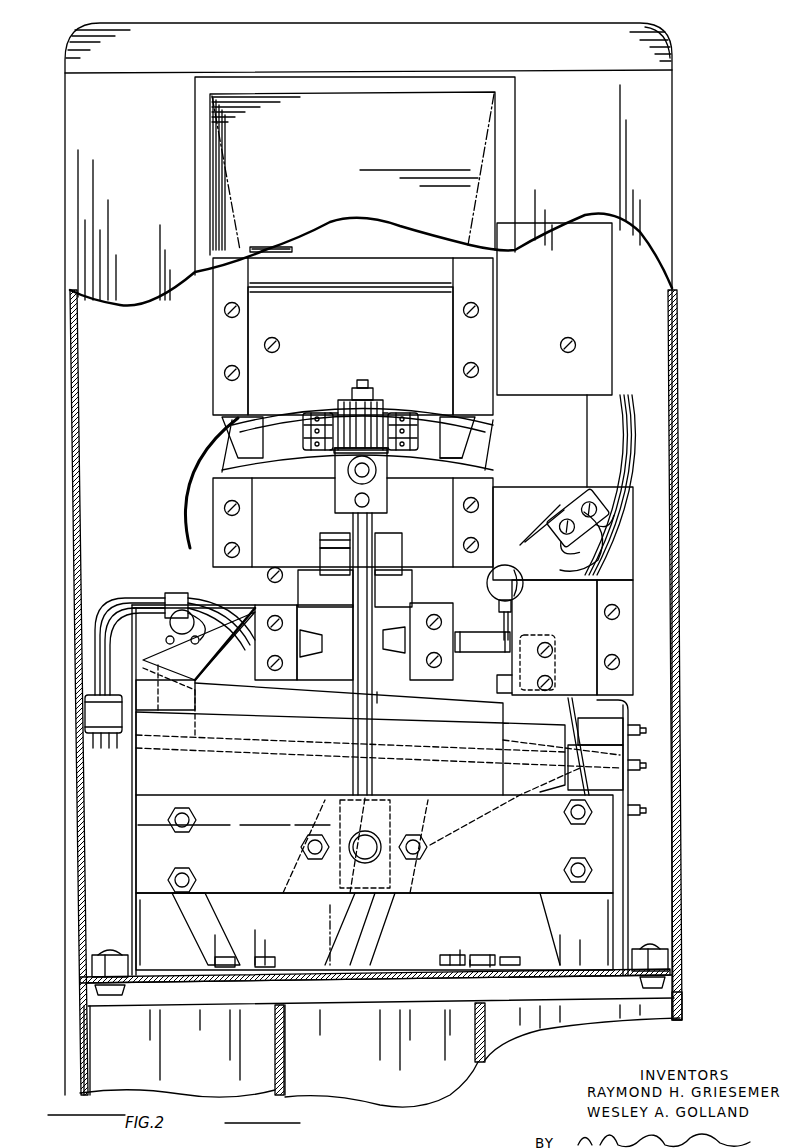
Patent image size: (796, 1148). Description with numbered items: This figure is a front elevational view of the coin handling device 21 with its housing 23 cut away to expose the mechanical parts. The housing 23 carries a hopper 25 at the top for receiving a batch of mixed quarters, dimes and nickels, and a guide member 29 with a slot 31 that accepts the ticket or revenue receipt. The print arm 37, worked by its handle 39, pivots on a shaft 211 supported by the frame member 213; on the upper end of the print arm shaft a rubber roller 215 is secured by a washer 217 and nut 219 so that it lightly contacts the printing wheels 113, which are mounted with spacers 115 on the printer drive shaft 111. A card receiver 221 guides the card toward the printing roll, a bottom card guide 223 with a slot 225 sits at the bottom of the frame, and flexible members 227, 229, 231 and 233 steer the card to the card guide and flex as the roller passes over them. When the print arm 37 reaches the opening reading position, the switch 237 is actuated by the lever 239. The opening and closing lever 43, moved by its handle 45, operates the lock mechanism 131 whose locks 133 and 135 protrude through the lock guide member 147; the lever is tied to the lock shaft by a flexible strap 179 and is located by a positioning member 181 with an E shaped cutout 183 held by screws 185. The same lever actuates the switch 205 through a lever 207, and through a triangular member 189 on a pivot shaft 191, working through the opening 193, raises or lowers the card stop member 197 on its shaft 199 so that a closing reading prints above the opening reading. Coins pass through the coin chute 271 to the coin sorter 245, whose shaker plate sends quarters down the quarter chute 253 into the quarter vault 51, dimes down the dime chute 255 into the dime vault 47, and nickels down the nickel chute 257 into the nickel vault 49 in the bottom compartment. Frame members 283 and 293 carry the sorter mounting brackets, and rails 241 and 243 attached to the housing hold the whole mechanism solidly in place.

The coin handling device 21 is at (690, 379).
The housing 23 is at (660, 132).
The hopper 25 is at (673, 53).
The guide member 29 is at (493, 180).
The slot 31 is at (272, 250).
The print arm 37 is at (372, 595).
The handle 39 is at (348, 470).
The opening and closing lever 43 is at (512, 607).
The handle 45 is at (512, 572).
The dime vault 47 is at (100, 1043).
The nickel vault 49 is at (345, 1095).
The quarter vault 51 is at (676, 1012).
The printer drive shaft 111 is at (303, 432).
The printing wheels 113 is at (317, 412).
The spacers 115 is at (303, 420).
The lock mechanism 131 is at (320, 692).
The lock 133 is at (314, 640).
The lock 135 is at (406, 638).
The lock guide member 147 is at (340, 671).
The flexible strap 179 is at (490, 625).
The positioning member 181 is at (590, 604).
The E shaped cutout 183 is at (508, 670).
The screws 185 is at (620, 662).
The triangular member 189 is at (345, 589).
The pivot shaft 191 is at (320, 556).
The opening 193 is at (398, 592).
The card stop member 197 is at (384, 538).
The shaft 199 is at (320, 538).
The switch 205 is at (553, 672).
The lever 207 is at (520, 630).
The shaft 211 is at (372, 840).
The frame member 213 is at (263, 805).
The rubber roller 215 is at (406, 402).
The washer 217 is at (372, 405).
The nut 219 is at (364, 382).
The card receiver 221 is at (374, 272).
The bottom card guide 223 is at (250, 533).
The slot 225 is at (332, 533).
The flexible member 227 is at (240, 442).
The flexible member 229 is at (212, 468).
The flexible member 231 is at (462, 430).
The flexible member 233 is at (470, 462).
The switch 237 is at (580, 500).
The lever 239 is at (535, 520).
The rail 241 is at (95, 968).
The rail 243 is at (663, 955).
The coin sorter 245 is at (252, 682).
The quarter chute 253 is at (560, 945).
The dime chute 255 is at (198, 940).
The nickel chute 257 is at (400, 930).
The coin chute 271 is at (178, 660).
The frame member 283 is at (130, 815).
The frame member 293 is at (645, 712).